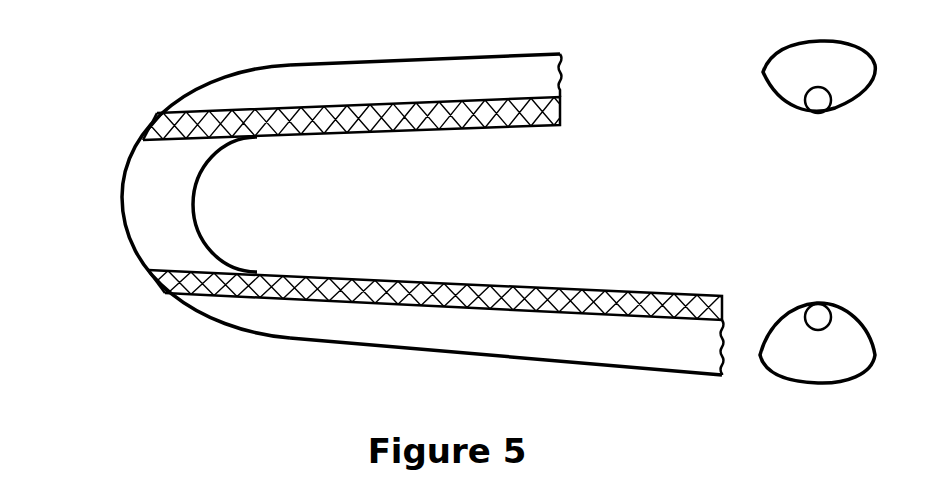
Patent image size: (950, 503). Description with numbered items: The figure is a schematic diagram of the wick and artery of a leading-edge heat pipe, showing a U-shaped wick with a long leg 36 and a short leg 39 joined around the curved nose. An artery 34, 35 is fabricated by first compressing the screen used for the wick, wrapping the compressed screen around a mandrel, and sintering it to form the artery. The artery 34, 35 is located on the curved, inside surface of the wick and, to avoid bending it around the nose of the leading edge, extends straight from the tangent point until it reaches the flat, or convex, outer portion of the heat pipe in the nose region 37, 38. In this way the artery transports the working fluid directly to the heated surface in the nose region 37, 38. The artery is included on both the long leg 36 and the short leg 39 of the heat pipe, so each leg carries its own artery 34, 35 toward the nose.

The artery 34 is at (818, 100).
The artery 35 is at (818, 317).
The long leg 36 is at (535, 345).
The nose region 37 is at (147, 128).
The nose region 38 is at (148, 273).
The short leg 39 is at (233, 95).